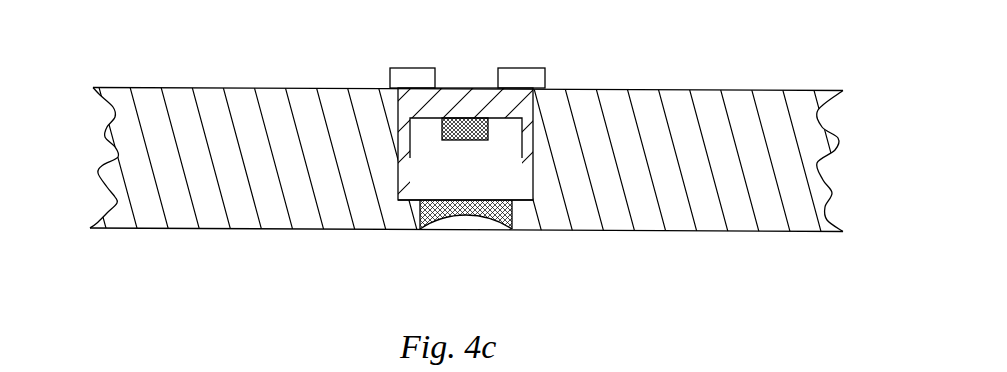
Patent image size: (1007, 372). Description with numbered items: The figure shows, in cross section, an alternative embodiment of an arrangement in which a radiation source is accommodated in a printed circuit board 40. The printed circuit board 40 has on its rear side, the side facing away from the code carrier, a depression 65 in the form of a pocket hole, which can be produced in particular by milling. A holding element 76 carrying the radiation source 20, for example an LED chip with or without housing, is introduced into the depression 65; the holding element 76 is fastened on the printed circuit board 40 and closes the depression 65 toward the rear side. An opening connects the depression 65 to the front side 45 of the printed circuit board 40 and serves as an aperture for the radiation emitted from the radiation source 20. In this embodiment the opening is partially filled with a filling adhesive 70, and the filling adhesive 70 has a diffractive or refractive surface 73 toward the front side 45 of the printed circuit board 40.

The printed circuit board 40 is at (162, 132).
The front side 45 is at (623, 230).
The holding element 76 is at (455, 105).
The depression 65 is at (407, 178).
The radiation source 20 is at (472, 120).
The filling adhesive 70 is at (470, 210).
The diffractive or refractive surface 73 is at (455, 214).